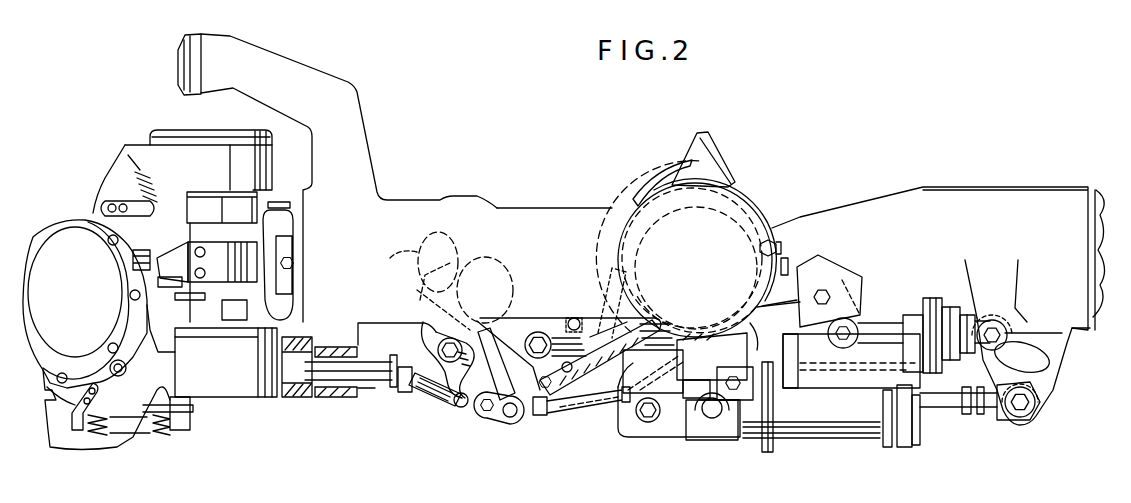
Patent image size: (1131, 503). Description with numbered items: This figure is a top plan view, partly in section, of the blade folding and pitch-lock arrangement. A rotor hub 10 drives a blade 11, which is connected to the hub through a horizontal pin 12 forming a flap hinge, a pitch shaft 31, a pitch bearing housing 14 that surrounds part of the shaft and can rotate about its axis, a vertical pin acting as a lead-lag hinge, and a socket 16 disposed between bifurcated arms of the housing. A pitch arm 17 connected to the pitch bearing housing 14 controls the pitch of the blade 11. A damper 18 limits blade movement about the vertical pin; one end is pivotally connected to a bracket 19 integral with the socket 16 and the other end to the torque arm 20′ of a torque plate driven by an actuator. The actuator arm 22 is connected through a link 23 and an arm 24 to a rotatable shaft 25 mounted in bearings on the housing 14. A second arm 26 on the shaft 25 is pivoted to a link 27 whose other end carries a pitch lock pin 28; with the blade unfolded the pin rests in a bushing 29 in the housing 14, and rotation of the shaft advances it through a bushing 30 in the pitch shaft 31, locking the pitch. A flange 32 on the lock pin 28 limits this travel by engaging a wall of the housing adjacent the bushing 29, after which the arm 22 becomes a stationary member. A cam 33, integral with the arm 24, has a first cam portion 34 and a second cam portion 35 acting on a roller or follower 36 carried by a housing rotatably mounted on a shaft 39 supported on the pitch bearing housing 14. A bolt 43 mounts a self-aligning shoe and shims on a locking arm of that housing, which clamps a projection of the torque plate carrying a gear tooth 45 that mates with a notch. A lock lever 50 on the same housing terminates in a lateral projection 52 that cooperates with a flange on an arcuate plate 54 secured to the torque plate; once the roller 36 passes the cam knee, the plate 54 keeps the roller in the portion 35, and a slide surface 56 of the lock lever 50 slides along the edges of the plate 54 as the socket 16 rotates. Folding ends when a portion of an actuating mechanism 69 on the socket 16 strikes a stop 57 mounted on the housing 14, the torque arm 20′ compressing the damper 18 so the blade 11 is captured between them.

The rotor hub 10 is at (79, 228).
The blade 11 is at (1095, 188).
The horizontal pin 12 is at (172, 131).
The pitch bearing housing 14 is at (518, 206).
The socket 16 is at (1000, 188).
The pitch arm 17 is at (325, 71).
The damper 18 is at (835, 420).
The bracket 19 is at (1047, 383).
The torque arm 20′ is at (632, 435).
The actuator arm 22 is at (765, 300).
The link 23 is at (557, 414).
The arm 24 is at (505, 397).
The rotatable shaft 25 is at (448, 356).
The second arm 26 is at (475, 384).
The link 27 is at (437, 393).
The pitch lock pin 28 is at (360, 397).
The bushing 29 is at (298, 397).
The bushing 30 is at (283, 373).
The pitch shaft 31 is at (287, 400).
The flange 32 is at (358, 330).
The cam 33 is at (415, 257).
The first cam portion 34 is at (420, 302).
The second cam portion 35 is at (445, 262).
The cam roller or follower 36 is at (472, 275).
The shaft 39 is at (535, 336).
The bolt 43 is at (593, 373).
The gear tooth 45 is at (580, 307).
The lock lever 50 is at (708, 333).
The lateral projection 52 is at (696, 268).
The arcuate plate 54 is at (622, 184).
The slide surface 56 is at (692, 258).
The stop 57 is at (728, 152).
The actuating mechanism 69 is at (908, 308).